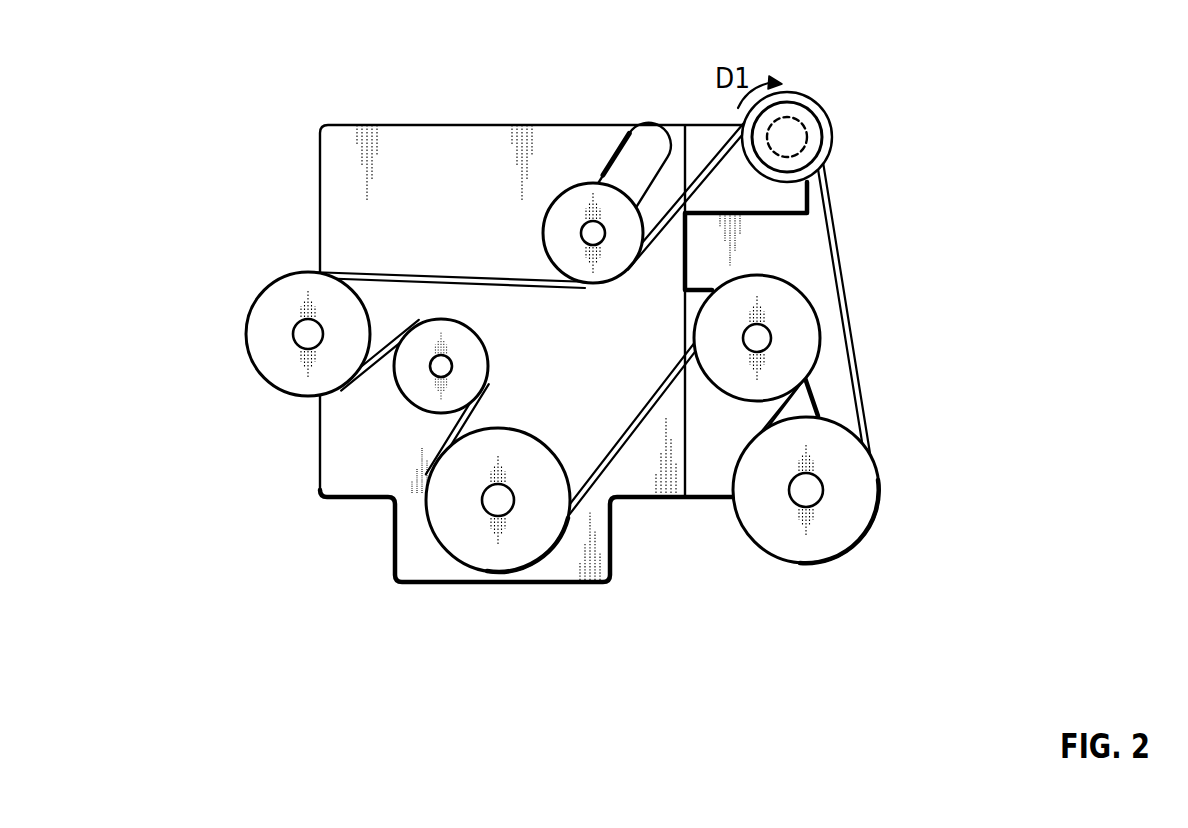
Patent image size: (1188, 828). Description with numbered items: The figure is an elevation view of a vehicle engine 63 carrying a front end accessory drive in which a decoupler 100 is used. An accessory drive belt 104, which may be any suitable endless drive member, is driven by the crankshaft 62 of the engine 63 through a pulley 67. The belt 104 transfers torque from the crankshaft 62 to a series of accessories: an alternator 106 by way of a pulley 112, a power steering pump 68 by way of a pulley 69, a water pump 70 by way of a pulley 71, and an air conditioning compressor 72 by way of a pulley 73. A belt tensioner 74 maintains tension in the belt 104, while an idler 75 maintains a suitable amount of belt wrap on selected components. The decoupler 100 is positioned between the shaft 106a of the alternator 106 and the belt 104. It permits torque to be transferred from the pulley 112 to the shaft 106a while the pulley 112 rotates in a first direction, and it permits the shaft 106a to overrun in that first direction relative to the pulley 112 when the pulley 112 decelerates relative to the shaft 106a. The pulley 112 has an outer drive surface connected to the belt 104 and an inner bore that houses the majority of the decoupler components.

The vehicle engine 63 is at (397, 125).
The belt tensioner 74 is at (599, 180).
The pulley 112 is at (802, 96).
The decoupler 100 is at (634, 276).
The shaft 106a is at (807, 133).
The alternator 106 is at (832, 137).
The accessory drive belt 104 is at (847, 265).
The power steering pump 68 is at (760, 337).
The pulley 69 is at (793, 365).
The air conditioning compressor 72 is at (810, 487).
The pulley 73 is at (832, 528).
The crankshaft 62 is at (500, 498).
The pulley 67 is at (520, 547).
The water pump 70 is at (307, 335).
The pulley 71 is at (258, 340).
The idler 75 is at (420, 383).